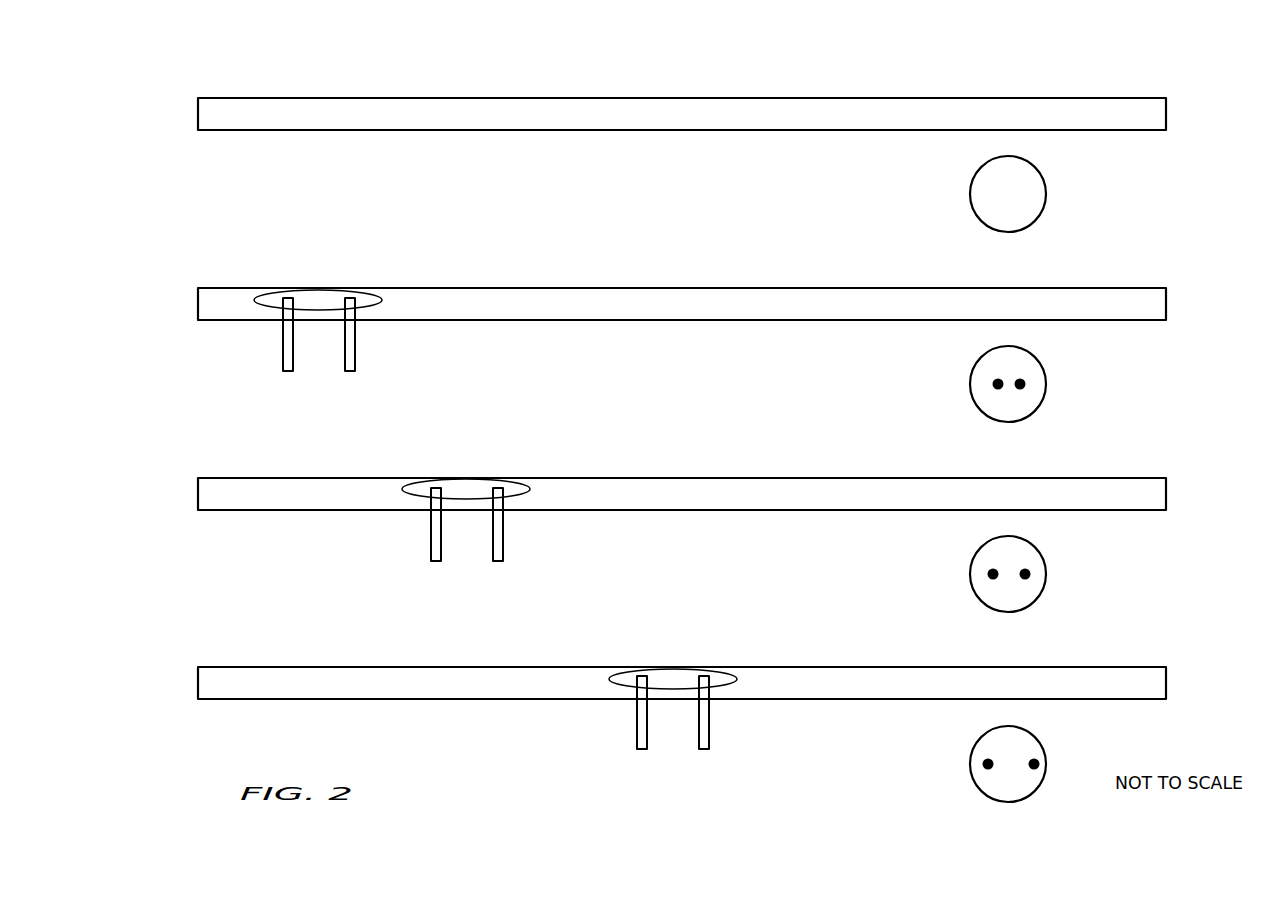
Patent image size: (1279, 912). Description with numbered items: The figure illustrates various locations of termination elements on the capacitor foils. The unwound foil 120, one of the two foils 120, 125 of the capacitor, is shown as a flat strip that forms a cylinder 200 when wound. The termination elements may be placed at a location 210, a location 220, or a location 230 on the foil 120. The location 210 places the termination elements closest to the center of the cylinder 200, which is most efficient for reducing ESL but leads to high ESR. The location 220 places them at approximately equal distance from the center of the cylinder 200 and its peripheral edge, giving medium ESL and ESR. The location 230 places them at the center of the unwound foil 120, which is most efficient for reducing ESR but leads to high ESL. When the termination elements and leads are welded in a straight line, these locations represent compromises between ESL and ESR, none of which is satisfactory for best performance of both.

The foil 120 is at (728, 715).
The foil 125 is at (283, 348).
The cylinder 200 is at (1041, 720).
The location 210 is at (320, 297).
The location 220 is at (469, 487).
The location 230 is at (674, 677).